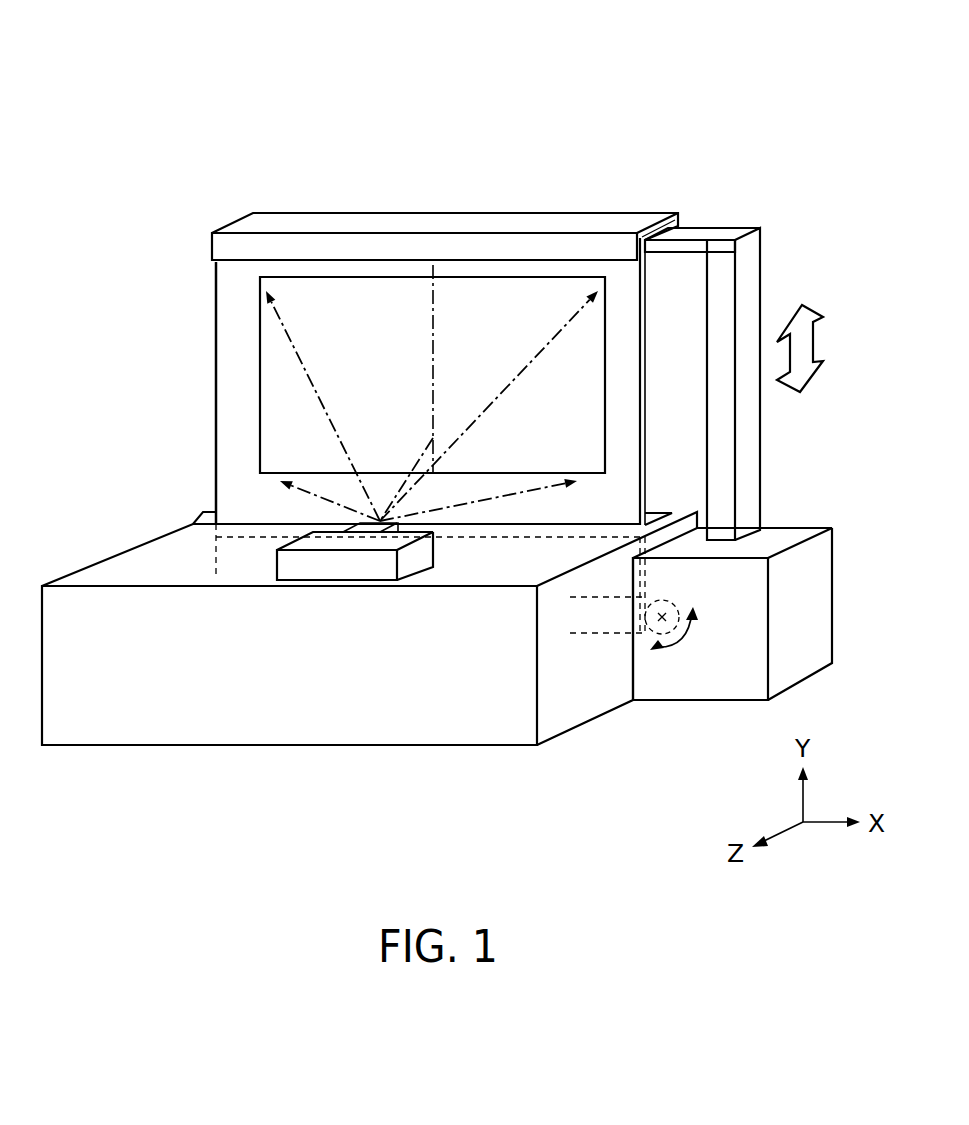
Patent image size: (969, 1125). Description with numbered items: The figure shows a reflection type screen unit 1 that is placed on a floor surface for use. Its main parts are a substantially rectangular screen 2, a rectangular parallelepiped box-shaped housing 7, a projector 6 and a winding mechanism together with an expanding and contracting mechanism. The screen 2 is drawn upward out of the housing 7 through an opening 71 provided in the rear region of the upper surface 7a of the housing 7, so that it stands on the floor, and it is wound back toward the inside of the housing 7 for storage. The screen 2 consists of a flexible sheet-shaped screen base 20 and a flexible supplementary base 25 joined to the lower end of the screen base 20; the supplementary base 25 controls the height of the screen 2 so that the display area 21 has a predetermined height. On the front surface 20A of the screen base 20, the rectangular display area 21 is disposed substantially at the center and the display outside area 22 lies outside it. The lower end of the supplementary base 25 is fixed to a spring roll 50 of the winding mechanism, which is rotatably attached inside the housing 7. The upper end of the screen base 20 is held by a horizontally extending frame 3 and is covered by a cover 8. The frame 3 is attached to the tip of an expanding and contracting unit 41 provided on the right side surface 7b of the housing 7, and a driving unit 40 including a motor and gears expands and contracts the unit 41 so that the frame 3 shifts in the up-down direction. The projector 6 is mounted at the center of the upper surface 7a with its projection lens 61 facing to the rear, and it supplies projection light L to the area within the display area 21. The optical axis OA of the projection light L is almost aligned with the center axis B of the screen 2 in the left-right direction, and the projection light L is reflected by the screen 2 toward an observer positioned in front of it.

The screen unit 1 is at (802, 80).
The screen 2 is at (120, 283).
The frame 3 is at (703, 232).
The projector 6 is at (315, 568).
The housing 7 is at (92, 558).
The upper surface 7a is at (153, 552).
The right side surface 7b is at (585, 708).
The cover 8 is at (632, 213).
The screen base 20 is at (215, 403).
The front surface 20A is at (230, 283).
The display area 21 is at (260, 357).
The display outside area 22 is at (230, 312).
The supplementary base 25 is at (212, 563).
The driving unit 40 is at (818, 660).
The expanding and contracting unit 41 is at (750, 257).
The spring roll 50 is at (667, 627).
The projection lens 61 is at (358, 533).
The opening 71 is at (202, 512).
The projection light L is at (317, 390).
The optical axis OA is at (418, 463).
The center axis B is at (433, 322).